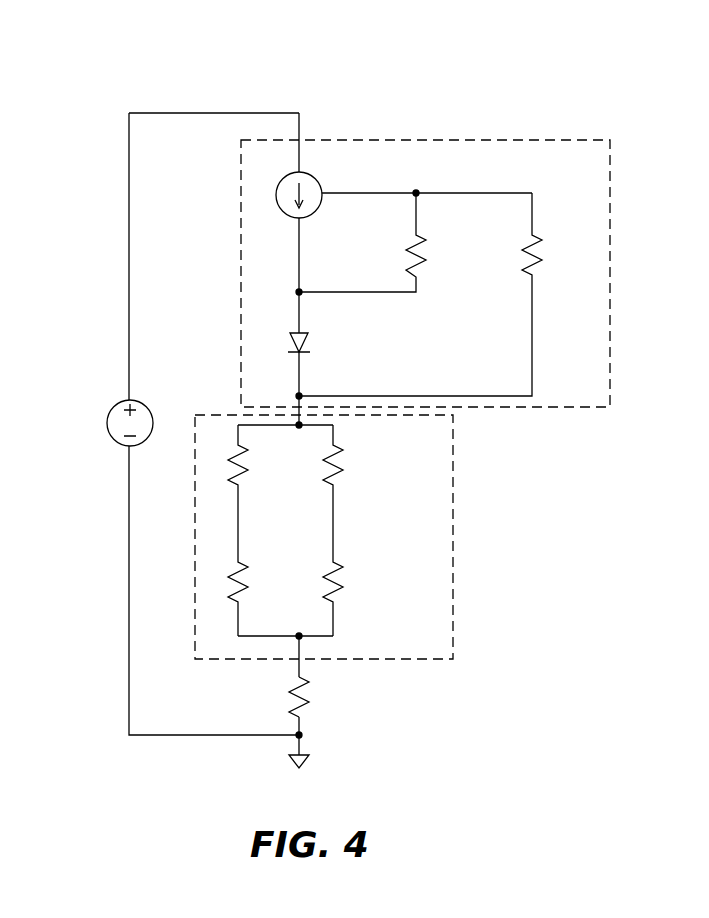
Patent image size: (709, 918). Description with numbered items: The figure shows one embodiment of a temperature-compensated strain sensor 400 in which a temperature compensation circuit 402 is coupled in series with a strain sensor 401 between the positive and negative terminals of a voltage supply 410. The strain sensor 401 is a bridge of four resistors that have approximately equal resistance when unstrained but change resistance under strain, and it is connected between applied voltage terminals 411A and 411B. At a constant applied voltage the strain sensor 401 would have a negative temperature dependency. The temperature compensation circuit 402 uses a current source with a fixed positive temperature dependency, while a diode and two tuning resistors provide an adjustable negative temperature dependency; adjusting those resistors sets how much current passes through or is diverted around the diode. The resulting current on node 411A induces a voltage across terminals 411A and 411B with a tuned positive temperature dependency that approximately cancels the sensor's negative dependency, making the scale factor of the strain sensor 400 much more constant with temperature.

The temperature-compensated strain sensor 400 is at (359, 58).
The strain sensor 401 is at (453, 541).
The temperature compensation circuit 402 is at (610, 256).
The voltage supply 410 is at (108, 434).
The applied voltage terminal 411A is at (302, 425).
The applied voltage terminal 411B is at (297, 638).